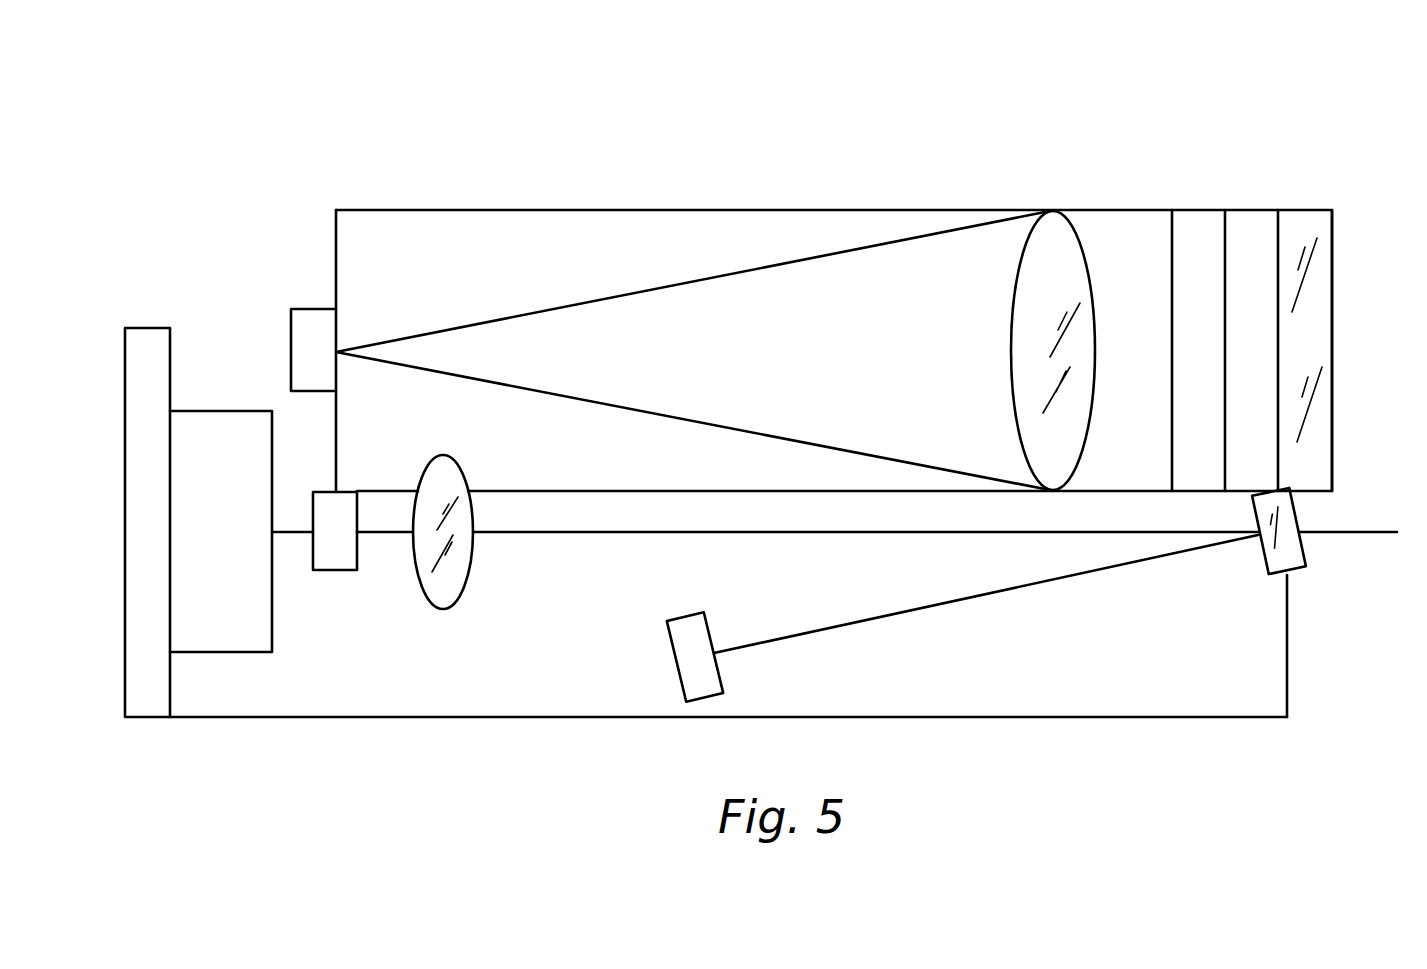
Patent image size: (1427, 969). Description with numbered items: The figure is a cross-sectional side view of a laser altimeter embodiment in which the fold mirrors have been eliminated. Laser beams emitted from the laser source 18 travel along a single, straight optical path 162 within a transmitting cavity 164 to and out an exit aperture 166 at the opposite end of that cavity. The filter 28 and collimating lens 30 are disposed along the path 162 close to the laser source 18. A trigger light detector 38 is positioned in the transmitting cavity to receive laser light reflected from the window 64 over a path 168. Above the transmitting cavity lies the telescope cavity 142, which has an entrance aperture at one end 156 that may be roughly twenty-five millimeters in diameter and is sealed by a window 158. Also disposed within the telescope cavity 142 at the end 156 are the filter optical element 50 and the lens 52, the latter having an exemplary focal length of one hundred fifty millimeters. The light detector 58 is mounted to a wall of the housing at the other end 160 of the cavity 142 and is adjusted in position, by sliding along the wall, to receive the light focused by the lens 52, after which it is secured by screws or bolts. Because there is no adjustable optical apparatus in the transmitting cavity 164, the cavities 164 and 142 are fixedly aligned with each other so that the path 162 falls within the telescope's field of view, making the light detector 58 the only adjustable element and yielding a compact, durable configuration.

The laser source 18 is at (152, 342).
The filter optical element 28 is at (335, 570).
The collimating lens optical element 30 is at (470, 582).
The trigger light detector 38 is at (673, 667).
The filter optical element 50 is at (1207, 215).
The lens 52 is at (1010, 350).
The light detector 58 is at (291, 350).
The window 64 is at (1300, 515).
The telescope cavity 142 is at (608, 228).
The end of the telescope cavity 156 is at (1332, 345).
The window 158 is at (1313, 218).
The other end of the telescope cavity 160 is at (336, 272).
The optical path 162 is at (718, 535).
The cavity 164 is at (1143, 703).
The exit aperture 166 is at (1293, 572).
The path 168 is at (950, 598).